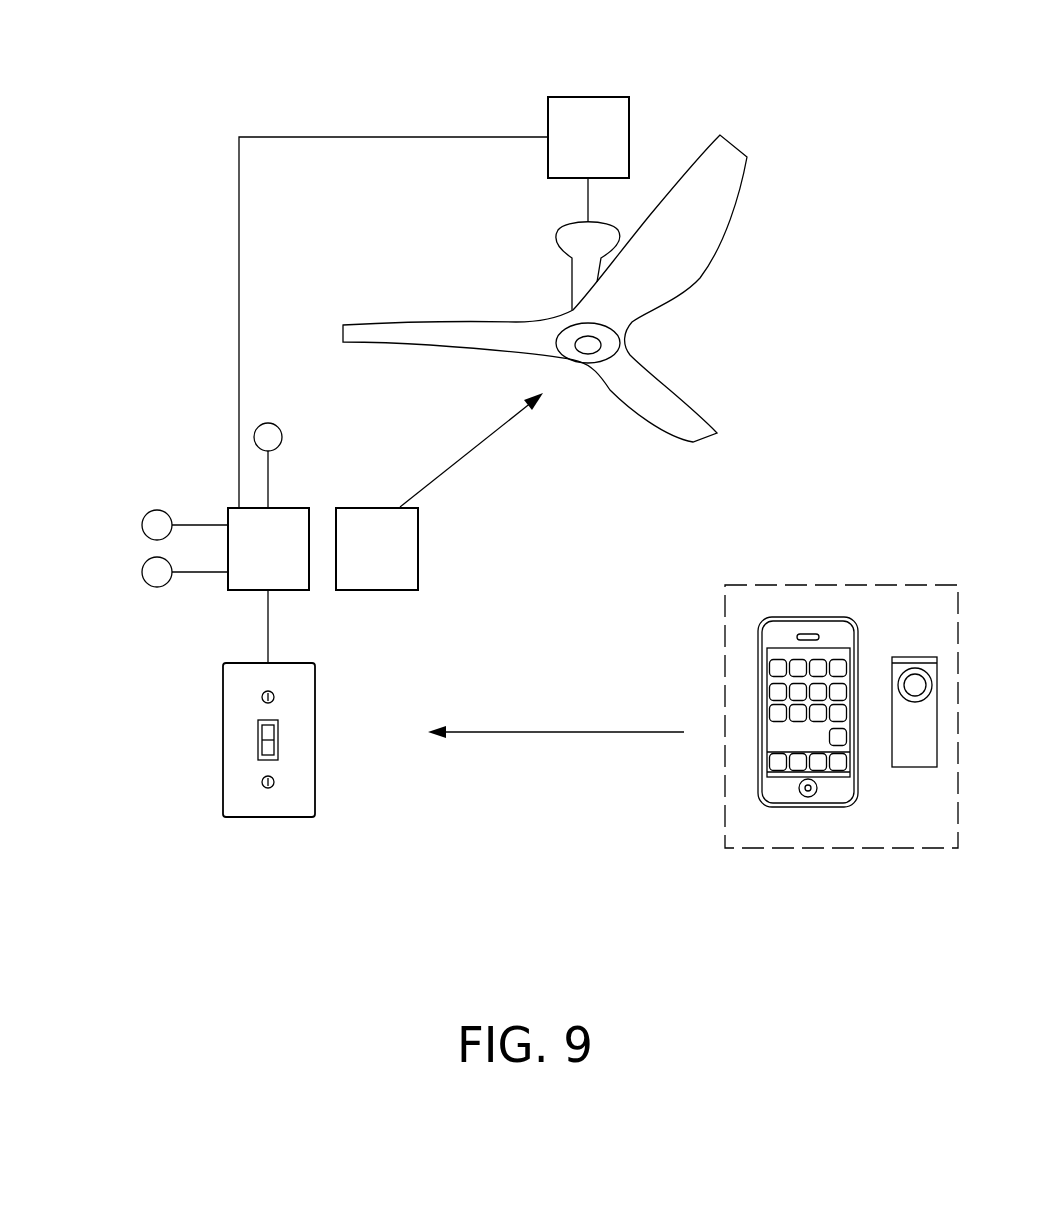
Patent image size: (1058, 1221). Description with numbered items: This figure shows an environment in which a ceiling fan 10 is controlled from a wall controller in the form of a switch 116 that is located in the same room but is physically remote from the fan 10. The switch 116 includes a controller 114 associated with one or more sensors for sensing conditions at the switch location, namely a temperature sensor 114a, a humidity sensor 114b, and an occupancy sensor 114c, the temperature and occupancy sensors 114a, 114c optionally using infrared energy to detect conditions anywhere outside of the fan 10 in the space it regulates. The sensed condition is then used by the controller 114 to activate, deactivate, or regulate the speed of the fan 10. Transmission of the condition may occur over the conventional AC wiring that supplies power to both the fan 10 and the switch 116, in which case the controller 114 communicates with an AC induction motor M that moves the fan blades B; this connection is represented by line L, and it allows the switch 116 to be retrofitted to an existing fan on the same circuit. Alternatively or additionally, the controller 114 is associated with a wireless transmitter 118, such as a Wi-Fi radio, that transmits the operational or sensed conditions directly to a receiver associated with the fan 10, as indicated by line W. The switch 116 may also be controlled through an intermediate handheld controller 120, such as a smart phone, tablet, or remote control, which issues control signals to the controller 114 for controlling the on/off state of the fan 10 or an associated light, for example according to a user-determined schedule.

The fan 10 is at (556, 242).
The AC induction motor M is at (598, 150).
The fan blades B is at (725, 185).
The line L is at (311, 137).
The controller 114 is at (287, 563).
The temperature sensor 114a is at (282, 439).
The humidity sensor 114b is at (142, 525).
The occupancy sensor 114c is at (142, 571).
The wireless transmitter 118 is at (397, 563).
The line W is at (470, 452).
The switch 116 is at (315, 772).
The handheld controller 120 is at (725, 707).